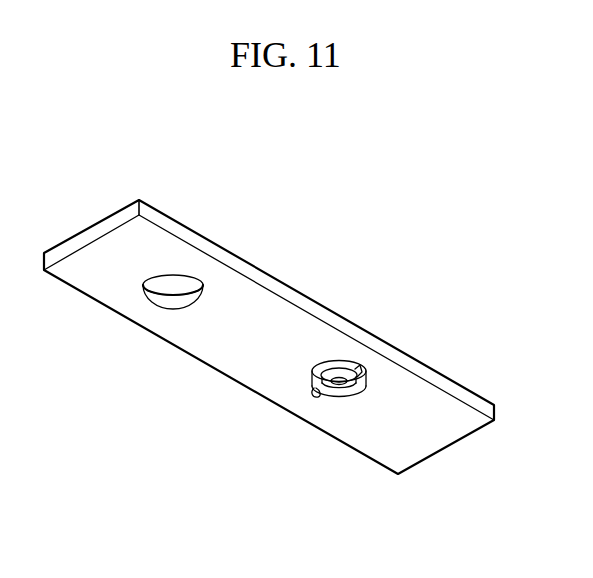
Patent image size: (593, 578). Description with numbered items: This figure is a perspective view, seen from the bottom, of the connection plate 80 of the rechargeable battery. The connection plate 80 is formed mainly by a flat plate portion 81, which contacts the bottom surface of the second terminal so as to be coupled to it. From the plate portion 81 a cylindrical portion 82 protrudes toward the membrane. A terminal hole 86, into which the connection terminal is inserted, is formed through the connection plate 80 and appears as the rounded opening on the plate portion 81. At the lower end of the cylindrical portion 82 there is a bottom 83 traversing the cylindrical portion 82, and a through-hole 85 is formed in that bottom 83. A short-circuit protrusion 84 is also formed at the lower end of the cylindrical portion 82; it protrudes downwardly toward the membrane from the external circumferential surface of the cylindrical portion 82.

The connection plate 80 is at (362, 294).
The plate portion 81 is at (228, 350).
The cylindrical portion 82 is at (362, 376).
The bottom 83 is at (353, 398).
The short-circuit protrusion 84 is at (315, 397).
The through-hole 85 is at (337, 392).
The terminal hole 86 is at (172, 296).